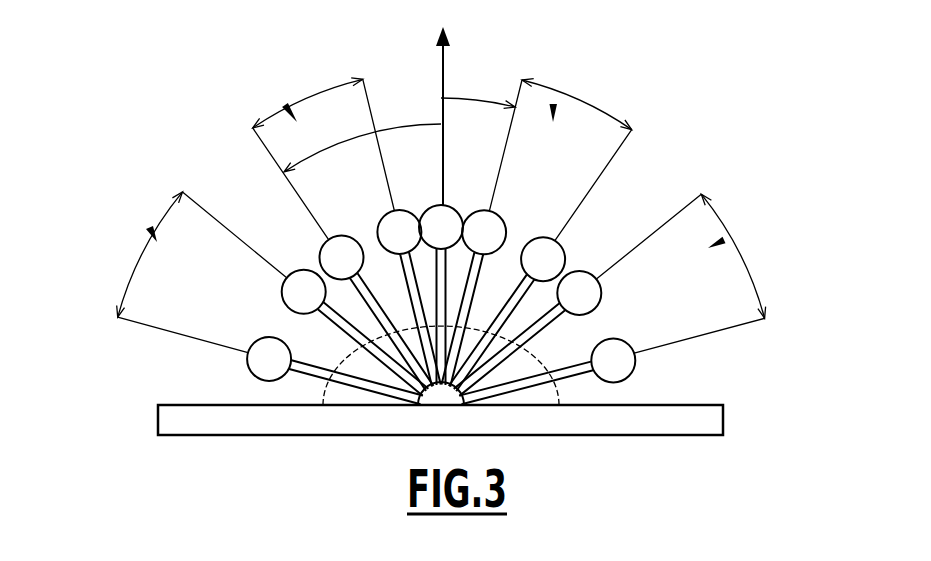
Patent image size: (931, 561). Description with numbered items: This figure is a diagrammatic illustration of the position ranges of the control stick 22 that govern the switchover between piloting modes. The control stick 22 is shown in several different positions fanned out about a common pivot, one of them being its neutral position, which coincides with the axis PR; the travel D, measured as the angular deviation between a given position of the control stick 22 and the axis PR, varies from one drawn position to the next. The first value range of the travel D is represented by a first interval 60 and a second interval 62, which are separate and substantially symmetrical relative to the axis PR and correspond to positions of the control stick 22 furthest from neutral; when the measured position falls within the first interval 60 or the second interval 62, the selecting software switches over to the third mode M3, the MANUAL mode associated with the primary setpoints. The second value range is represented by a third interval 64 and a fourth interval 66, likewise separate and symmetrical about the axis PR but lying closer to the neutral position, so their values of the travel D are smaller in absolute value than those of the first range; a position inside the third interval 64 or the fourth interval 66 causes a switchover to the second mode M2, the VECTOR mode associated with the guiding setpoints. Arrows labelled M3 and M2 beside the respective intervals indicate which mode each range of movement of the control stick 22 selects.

The control stick 22 is at (578, 400).
The first interval 60 is at (740, 255).
The second interval 62 is at (133, 267).
The third interval 64 is at (603, 110).
The fourth interval 66 is at (307, 98).
The second mode M2 is at (285, 105).
The third mode M3 is at (150, 228).
The travel D is at (332, 147).
The axis PR is at (437, 65).